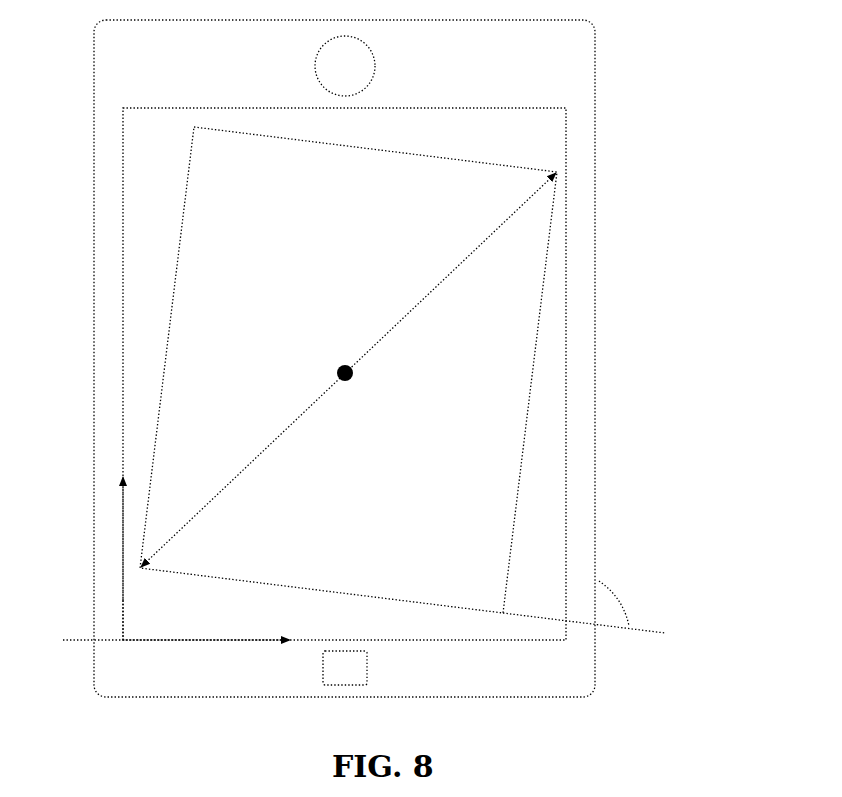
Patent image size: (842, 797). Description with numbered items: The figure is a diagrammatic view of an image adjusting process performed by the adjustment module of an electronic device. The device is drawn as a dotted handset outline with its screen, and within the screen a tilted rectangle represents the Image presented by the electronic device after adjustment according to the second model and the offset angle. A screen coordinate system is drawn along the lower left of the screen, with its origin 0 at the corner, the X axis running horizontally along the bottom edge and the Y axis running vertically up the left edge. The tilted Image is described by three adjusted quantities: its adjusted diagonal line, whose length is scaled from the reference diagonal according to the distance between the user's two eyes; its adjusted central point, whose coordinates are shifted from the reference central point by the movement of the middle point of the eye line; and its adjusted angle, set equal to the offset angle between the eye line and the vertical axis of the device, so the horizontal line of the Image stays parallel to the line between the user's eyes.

The images presented by the electronic device Image is at (535, 347).
The origin of the screen coordinate system 0 is at (93, 634).
The X axis of the screen coordinate system X is at (207, 656).
The Y axis of the screen coordinate system Y is at (111, 538).